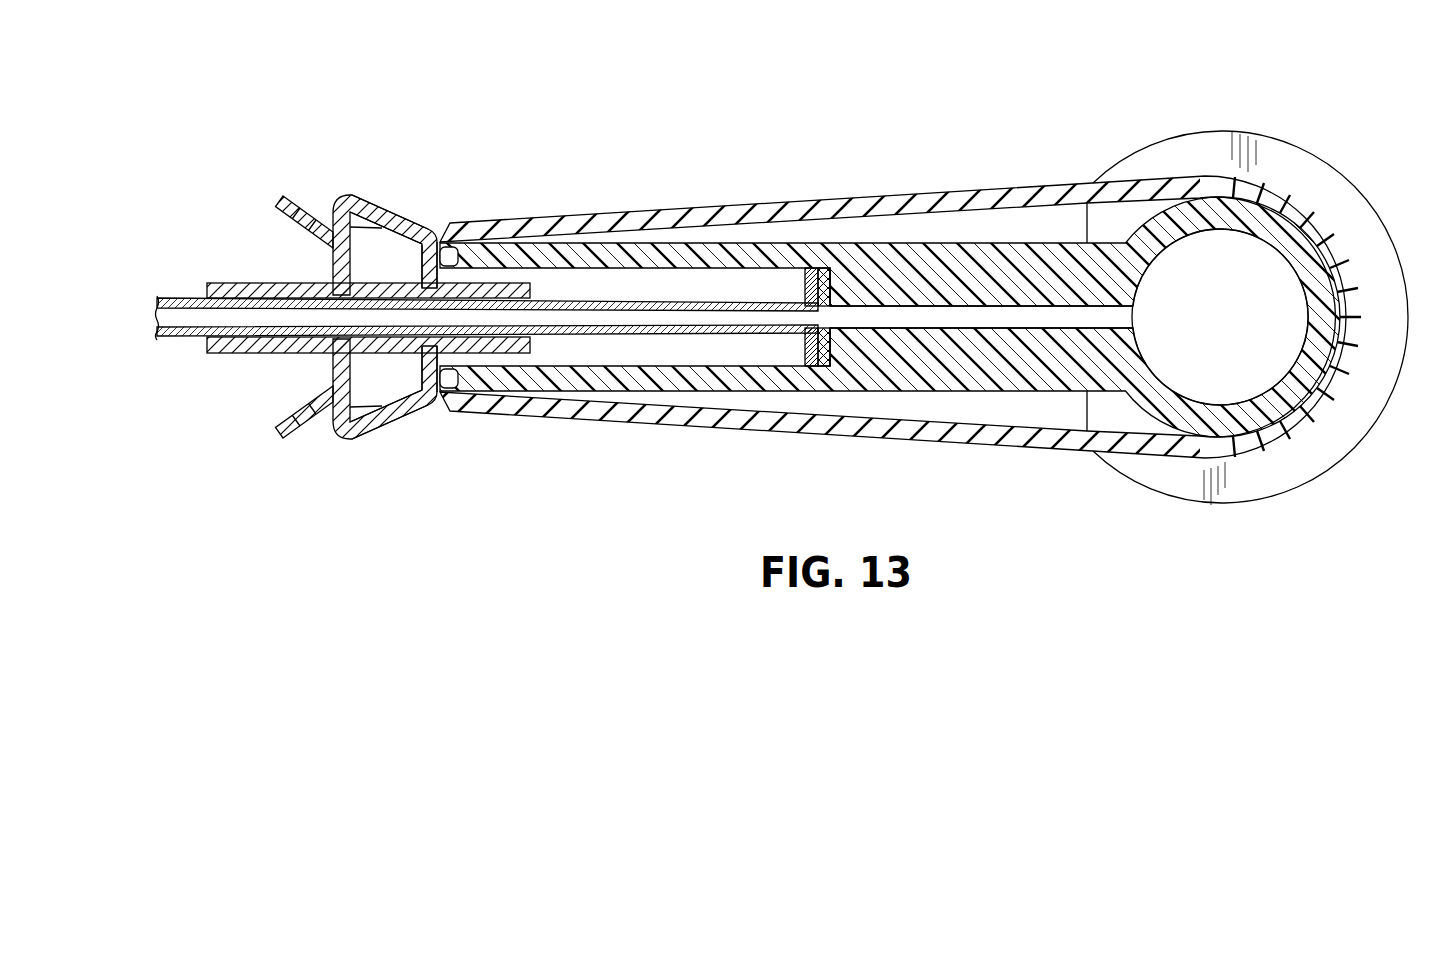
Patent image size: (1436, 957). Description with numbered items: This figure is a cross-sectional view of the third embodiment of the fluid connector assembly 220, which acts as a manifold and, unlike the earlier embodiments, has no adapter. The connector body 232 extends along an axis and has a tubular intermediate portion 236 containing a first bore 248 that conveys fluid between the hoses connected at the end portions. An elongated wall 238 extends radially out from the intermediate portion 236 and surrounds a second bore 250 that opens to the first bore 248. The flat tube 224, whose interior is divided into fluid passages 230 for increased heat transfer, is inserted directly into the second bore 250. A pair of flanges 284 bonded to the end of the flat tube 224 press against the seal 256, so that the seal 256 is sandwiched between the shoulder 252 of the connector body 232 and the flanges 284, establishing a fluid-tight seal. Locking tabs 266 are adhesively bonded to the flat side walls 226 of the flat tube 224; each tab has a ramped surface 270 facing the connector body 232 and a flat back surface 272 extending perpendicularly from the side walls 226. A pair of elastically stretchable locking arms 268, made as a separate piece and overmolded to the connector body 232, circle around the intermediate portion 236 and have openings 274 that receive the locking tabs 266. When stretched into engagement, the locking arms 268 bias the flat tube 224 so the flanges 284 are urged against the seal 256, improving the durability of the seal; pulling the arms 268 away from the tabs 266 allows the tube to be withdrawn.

The fluid connector assembly 220 is at (579, 115).
The flat tube 224 is at (168, 295).
The flat side walls 226 is at (195, 300).
The fluid passages 230 is at (224, 315).
The connector body 232 is at (1298, 140).
The intermediate portion 236 is at (1295, 258).
The elongated wall 238 is at (830, 345).
The first bore 248 is at (1206, 329).
The second bore 250 is at (1120, 318).
The shoulder 252 is at (838, 295).
The seal 256 is at (820, 300).
The locking tabs 266 is at (370, 192).
The locking arms 268 is at (684, 203).
The ramped surface 270 is at (398, 211).
The flat back surface 272 is at (333, 266).
The openings 274 is at (446, 240).
The flanges 284 is at (805, 290).